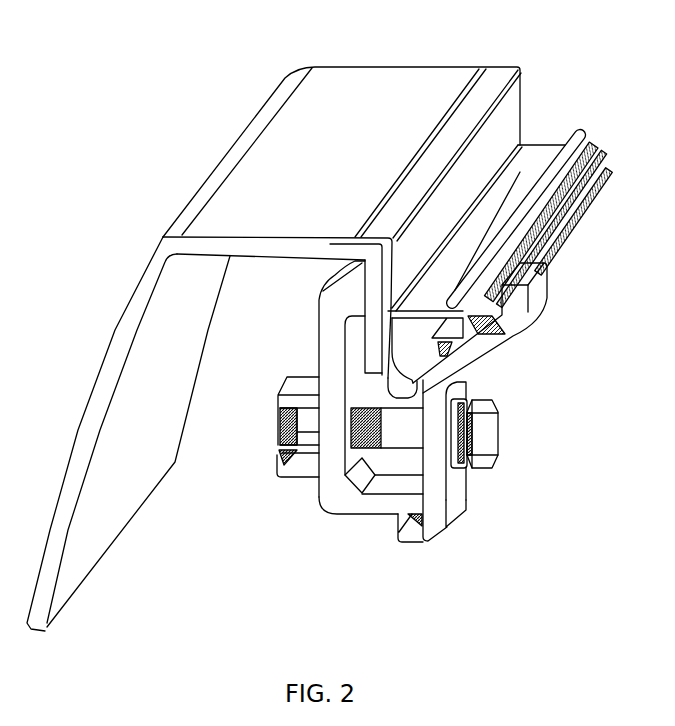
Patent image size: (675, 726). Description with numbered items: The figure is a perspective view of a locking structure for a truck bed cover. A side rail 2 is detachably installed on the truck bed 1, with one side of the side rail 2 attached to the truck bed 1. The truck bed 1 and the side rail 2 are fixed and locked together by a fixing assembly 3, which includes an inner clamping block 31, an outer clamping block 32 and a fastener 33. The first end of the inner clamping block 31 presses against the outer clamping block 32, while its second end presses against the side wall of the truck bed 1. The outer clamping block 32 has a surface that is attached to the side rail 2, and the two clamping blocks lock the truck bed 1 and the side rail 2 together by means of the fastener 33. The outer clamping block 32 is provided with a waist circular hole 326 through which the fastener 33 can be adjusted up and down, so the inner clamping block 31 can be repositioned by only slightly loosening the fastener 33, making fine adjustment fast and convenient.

The truck bed 1 is at (417, 77).
The side rail 2 is at (517, 112).
The fixing assembly 3 is at (338, 540).
The inner clamping block 31 is at (323, 345).
The outer clamping block 32 is at (485, 402).
The fastener 33 is at (498, 433).
The waist circular hole 326 is at (462, 478).